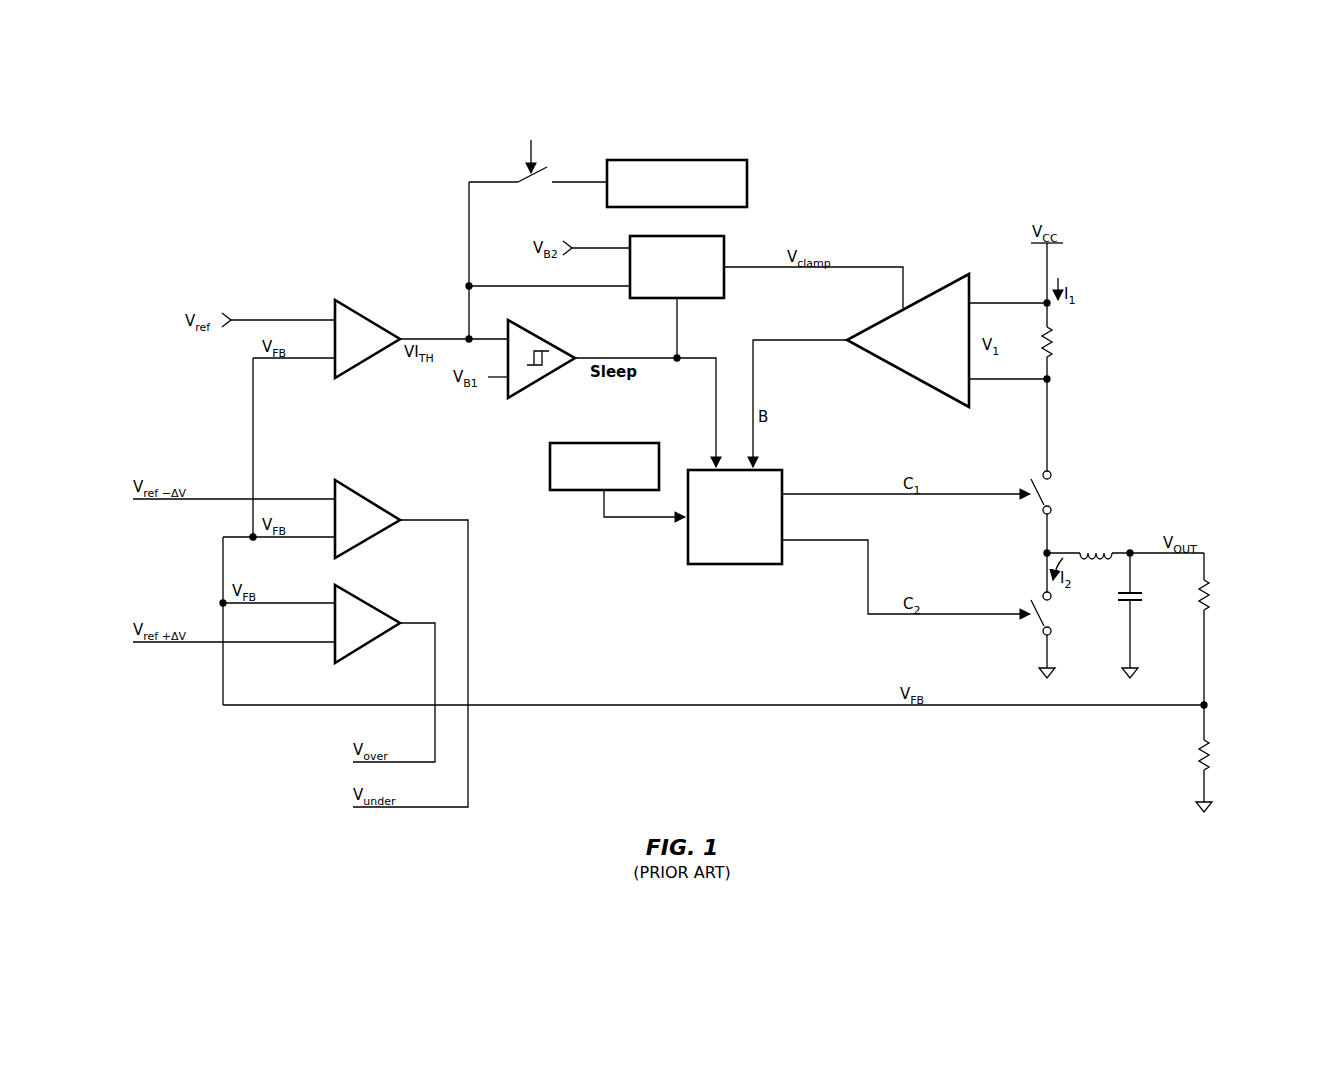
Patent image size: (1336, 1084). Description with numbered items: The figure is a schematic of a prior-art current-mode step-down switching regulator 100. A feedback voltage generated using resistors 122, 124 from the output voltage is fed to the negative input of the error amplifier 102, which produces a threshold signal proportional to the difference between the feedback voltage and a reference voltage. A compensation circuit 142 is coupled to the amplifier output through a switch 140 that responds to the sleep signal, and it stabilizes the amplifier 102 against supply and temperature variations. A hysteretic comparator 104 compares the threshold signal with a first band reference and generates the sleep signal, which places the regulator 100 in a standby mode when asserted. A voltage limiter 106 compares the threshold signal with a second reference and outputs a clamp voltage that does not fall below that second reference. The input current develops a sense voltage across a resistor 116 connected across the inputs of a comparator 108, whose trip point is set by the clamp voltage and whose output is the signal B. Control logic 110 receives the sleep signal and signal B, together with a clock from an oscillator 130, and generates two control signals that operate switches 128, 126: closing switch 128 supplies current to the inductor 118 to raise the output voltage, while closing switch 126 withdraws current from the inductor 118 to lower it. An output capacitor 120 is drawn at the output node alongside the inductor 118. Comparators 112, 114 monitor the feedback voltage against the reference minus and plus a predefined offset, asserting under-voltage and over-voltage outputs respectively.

The current-mode step-down switching regulator 100 is at (1118, 166).
The amplifier 102 is at (378, 311).
The hysteretic comparator 104 is at (543, 381).
The voltage limiter 106 is at (653, 299).
The comparator 108 is at (912, 382).
The control logic 110 is at (688, 545).
The comparator 112 is at (378, 492).
The comparator 114 is at (378, 597).
The resistor 116 is at (1053, 339).
The inductor 118 is at (1098, 547).
The output capacitor 120 is at (1143, 600).
The resistor 122 is at (1210, 598).
The resistor 124 is at (1199, 752).
The switch 126 is at (1052, 612).
The switch 128 is at (1052, 489).
The oscillator 130 is at (550, 465).
The switch 140 is at (539, 184).
The compensation circuit 142 is at (748, 184).